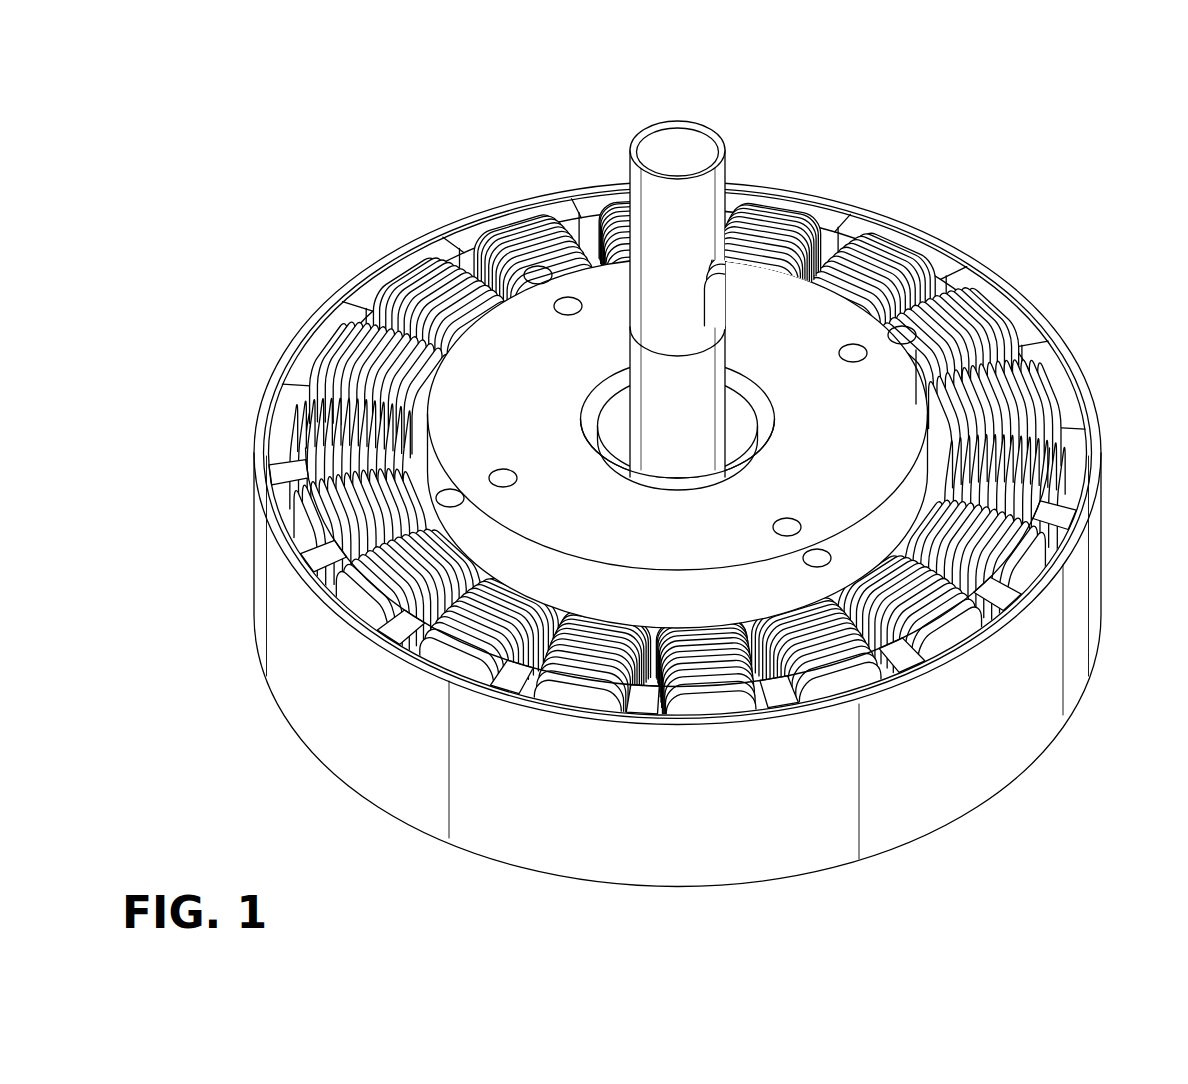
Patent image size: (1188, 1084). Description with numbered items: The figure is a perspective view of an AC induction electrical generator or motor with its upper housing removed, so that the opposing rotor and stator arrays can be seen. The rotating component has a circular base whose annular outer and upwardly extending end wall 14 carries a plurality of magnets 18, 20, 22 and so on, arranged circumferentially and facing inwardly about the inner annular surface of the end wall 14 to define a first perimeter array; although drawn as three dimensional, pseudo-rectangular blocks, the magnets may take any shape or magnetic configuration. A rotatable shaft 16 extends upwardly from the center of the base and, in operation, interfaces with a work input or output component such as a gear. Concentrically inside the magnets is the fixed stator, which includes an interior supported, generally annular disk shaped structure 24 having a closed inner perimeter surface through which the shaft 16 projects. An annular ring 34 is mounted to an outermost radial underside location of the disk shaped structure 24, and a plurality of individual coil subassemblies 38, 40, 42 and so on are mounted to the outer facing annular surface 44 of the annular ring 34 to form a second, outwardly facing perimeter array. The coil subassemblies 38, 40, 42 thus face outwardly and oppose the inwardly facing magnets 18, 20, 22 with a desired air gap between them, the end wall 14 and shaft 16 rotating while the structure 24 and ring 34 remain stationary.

The annular outer and upwardly extending end wall 14 is at (1080, 660).
The rotatable shaft 16 is at (690, 132).
The magnet 18 is at (1070, 400).
The magnet 20 is at (988, 300).
The magnet 22 is at (833, 222).
The annular disk shaped structure 24 is at (487, 372).
The annular ring 34 is at (420, 415).
The coil subassembly 38 is at (912, 368).
The coil subassembly 40 is at (858, 318).
The coil subassembly 42 is at (800, 283).
The outer facing annular surface 44 is at (662, 627).